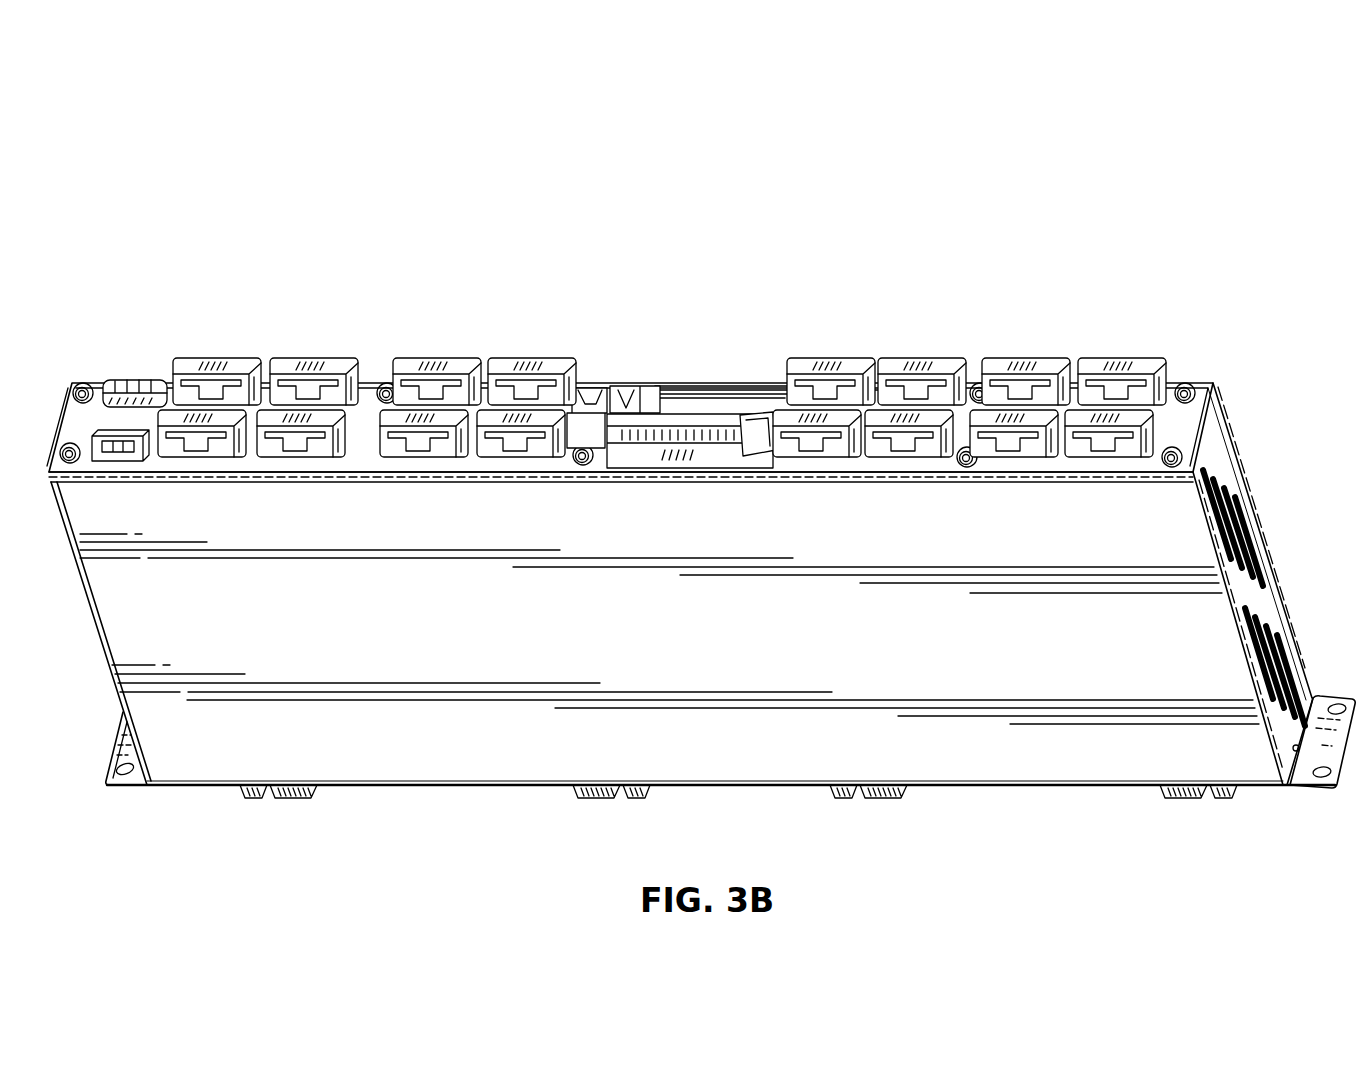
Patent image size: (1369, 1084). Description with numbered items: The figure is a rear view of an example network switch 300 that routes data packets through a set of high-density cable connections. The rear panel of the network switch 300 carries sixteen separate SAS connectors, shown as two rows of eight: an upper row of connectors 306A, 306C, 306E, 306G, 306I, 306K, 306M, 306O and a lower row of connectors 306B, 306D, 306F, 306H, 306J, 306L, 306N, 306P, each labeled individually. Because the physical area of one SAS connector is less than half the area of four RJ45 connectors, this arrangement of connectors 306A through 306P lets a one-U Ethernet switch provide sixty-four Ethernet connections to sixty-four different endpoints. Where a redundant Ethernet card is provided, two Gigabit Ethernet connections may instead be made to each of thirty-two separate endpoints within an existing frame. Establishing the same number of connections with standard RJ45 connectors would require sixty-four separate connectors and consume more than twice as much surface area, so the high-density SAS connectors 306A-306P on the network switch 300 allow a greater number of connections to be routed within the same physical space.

The network switch 300 is at (1150, 172).
The SAS connector 306A is at (213, 358).
The SAS connector 306B is at (182, 410).
The SAS connector 306C is at (330, 358).
The SAS connector 306D is at (306, 410).
The SAS connector 306E is at (453, 358).
The SAS connector 306F is at (431, 410).
The SAS connector 306G is at (558, 358).
The SAS connector 306H is at (533, 410).
The SAS connector 306I is at (848, 358).
The SAS connector 306J is at (824, 410).
The SAS connector 306K is at (947, 358).
The SAS connector 306L is at (921, 410).
The SAS connector 306M is at (1043, 358).
The SAS connector 306N is at (1019, 410).
The SAS connector 306O is at (1142, 358).
The SAS connector 306P is at (1116, 410).